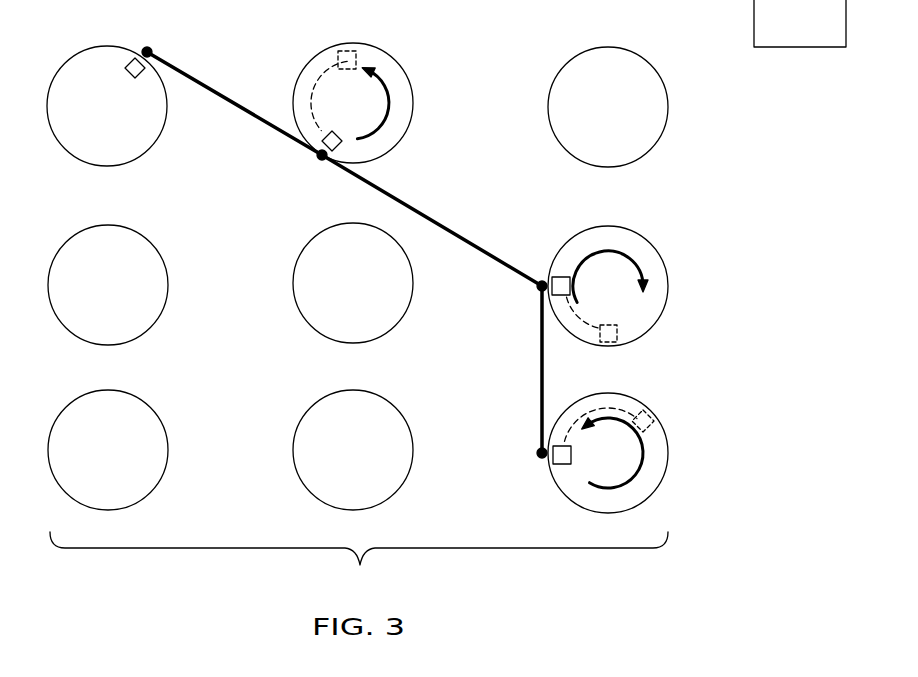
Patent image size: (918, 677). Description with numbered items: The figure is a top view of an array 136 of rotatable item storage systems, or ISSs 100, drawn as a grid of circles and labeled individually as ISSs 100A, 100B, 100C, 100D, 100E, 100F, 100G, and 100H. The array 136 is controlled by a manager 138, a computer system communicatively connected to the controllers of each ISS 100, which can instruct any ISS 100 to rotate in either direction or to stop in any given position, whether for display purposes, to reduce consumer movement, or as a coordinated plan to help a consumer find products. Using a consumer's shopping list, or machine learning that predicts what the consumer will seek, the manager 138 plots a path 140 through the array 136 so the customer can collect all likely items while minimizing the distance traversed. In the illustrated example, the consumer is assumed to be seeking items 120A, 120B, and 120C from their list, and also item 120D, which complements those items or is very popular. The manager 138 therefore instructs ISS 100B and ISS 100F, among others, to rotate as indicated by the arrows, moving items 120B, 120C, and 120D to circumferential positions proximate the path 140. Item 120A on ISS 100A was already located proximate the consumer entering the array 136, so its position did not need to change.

The item storage system 100 is at (663, 430).
The item storage system 100A is at (108, 44).
The item storage system 100B is at (388, 52).
The item storage system 100C is at (626, 50).
The item storage system 100D is at (134, 229).
The item storage system 100E is at (410, 306).
The item storage system 100F is at (647, 240).
The item storage system 100G is at (140, 400).
The item storage system 100H is at (395, 405).
The item 120A is at (132, 80).
The item 120B is at (338, 134).
The item 120C is at (560, 277).
The item 120D is at (562, 464).
The array 136 is at (359, 562).
The manager 138 is at (781, 18).
The path 140 is at (392, 197).